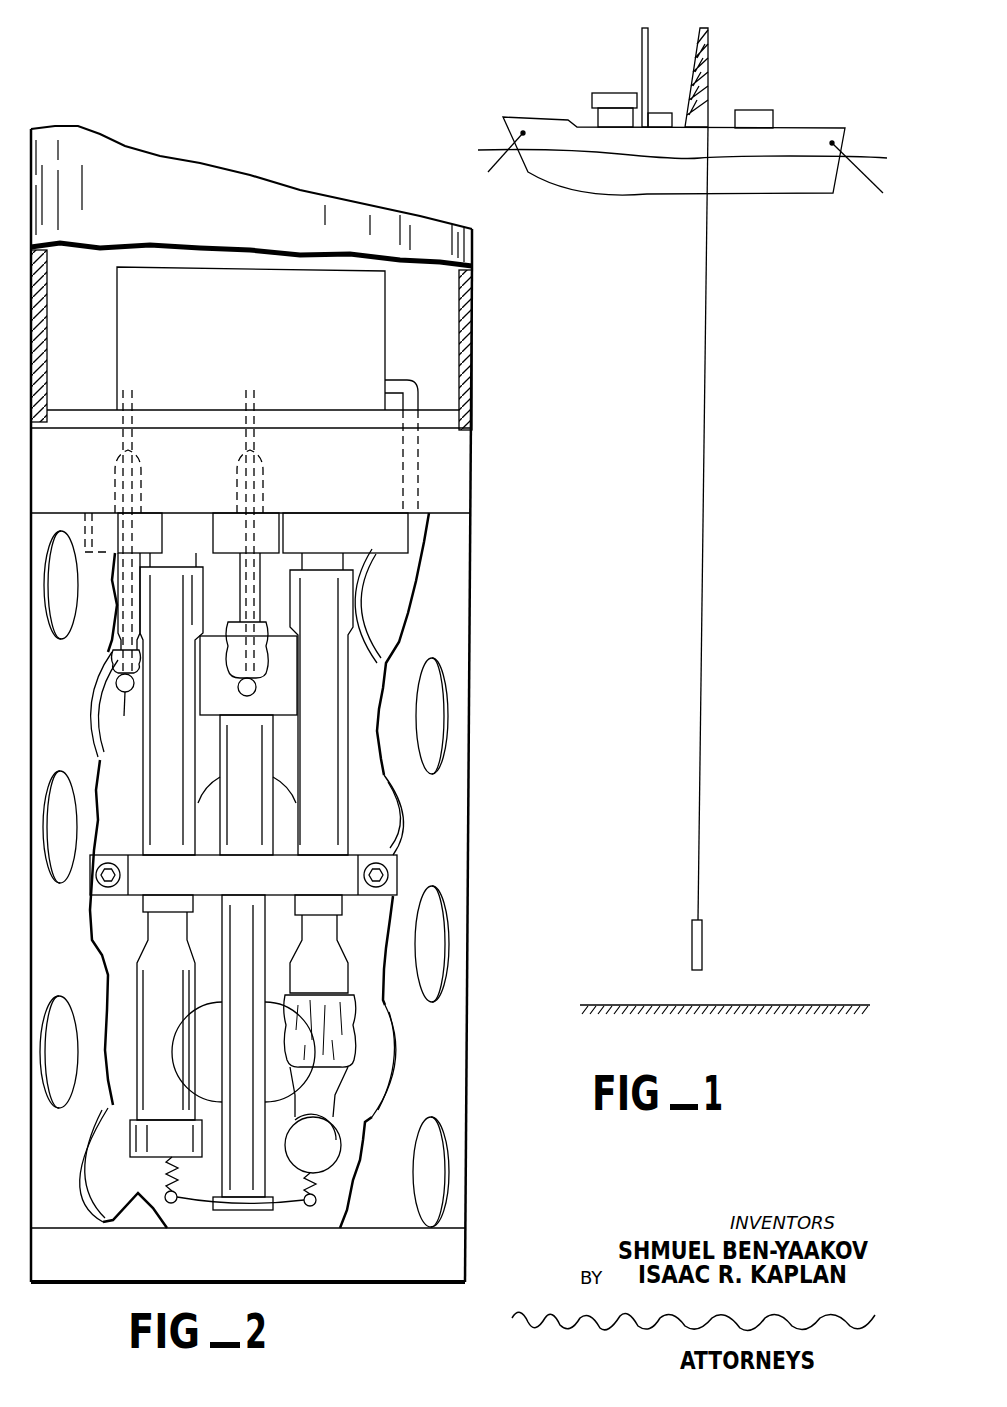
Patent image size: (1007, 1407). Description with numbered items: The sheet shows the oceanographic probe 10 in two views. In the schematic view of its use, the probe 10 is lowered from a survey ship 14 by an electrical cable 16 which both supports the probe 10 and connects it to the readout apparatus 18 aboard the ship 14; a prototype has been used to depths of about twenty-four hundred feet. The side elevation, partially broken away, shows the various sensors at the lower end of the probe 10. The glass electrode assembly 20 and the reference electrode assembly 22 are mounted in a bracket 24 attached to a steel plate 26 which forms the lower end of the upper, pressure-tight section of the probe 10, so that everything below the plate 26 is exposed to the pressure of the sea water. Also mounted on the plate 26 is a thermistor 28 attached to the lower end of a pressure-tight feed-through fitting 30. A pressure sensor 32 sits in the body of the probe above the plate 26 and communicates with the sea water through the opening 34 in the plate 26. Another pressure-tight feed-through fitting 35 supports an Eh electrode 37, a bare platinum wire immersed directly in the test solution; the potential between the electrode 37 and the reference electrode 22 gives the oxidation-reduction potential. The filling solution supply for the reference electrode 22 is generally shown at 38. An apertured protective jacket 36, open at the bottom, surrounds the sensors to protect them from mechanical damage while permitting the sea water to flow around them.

In FIG. 2, the probe 10 is at (229, 159).
In FIG. 1, the probe 10 is at (705, 945).
In FIG. 1, the survey ship 14 is at (655, 172).
In FIG. 1, the electrical cable 16 is at (704, 312).
In FIG. 1, the readout apparatus 18 is at (748, 110).
In FIG. 2, the glass electrode assembly 20 is at (346, 1110).
In FIG. 2, the reference electrode assembly 22 is at (136, 1106).
In FIG. 2, the bracket 24 is at (377, 538).
In FIG. 2, the steel plate 26 is at (460, 474).
In FIG. 2, the thermistor 28 is at (255, 688).
In FIG. 2, the pressure-tight feed-through fitting 30 is at (236, 622).
In FIG. 2, the pressure sensor 32 is at (342, 392).
In FIG. 2, the opening 34 is at (403, 472).
In FIG. 2, the pressure-tight feed-through fitting 35 is at (120, 605).
In FIG. 2, the apertured protective jacket 36 is at (469, 816).
In FIG. 2, the Eh electrode 37 is at (124, 716).
In FIG. 2, the filling solution supply 38 is at (260, 822).